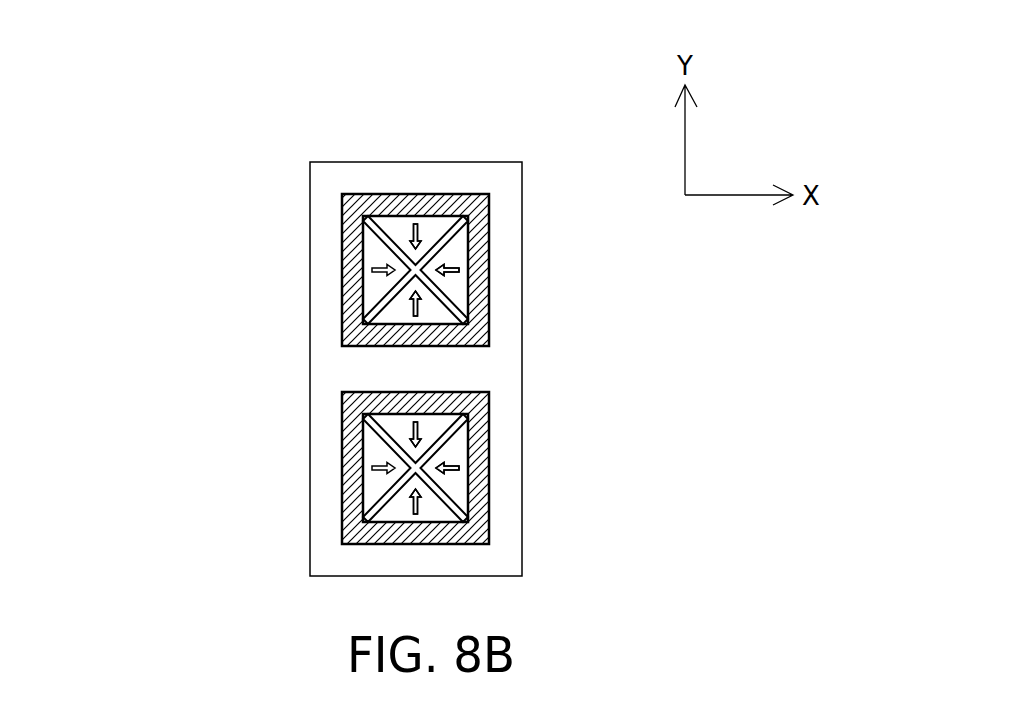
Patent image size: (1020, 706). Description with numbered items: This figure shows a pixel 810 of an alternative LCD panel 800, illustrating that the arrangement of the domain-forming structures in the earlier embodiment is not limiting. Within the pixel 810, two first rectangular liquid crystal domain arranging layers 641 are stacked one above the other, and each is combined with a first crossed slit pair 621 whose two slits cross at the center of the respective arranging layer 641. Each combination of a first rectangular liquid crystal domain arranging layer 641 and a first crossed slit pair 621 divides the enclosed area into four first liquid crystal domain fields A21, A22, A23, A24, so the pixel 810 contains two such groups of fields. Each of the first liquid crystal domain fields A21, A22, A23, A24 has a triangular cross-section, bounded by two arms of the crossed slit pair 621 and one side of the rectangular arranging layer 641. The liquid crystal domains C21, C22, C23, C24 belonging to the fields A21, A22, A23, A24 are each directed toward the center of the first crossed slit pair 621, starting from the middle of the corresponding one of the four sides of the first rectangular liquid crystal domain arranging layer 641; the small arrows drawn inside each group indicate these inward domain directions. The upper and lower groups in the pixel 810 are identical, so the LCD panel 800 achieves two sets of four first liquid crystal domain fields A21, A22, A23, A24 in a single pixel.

The LCD panel 800 is at (98, 82).
The pixel 810 is at (502, 150).
The first rectangular liquid crystal domain arranging layer 641 is at (350, 207).
The first crossed slit pair 621 is at (470, 238).
The first liquid crystal domain field A21 is at (372, 287).
The first liquid crystal domain field A22 is at (392, 223).
The first liquid crystal domain field A23 is at (460, 250).
The first liquid crystal domain field A24 is at (385, 322).
The liquid crystal domain C21 is at (372, 250).
The liquid crystal domain C22 is at (415, 223).
The liquid crystal domain C23 is at (452, 275).
The liquid crystal domain C24 is at (418, 320).